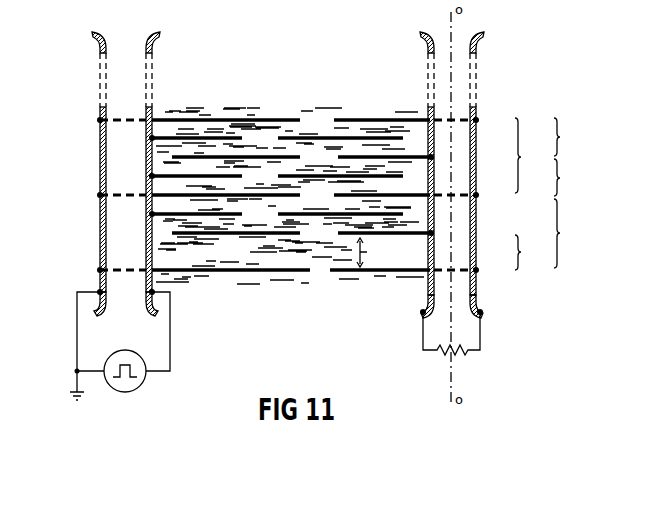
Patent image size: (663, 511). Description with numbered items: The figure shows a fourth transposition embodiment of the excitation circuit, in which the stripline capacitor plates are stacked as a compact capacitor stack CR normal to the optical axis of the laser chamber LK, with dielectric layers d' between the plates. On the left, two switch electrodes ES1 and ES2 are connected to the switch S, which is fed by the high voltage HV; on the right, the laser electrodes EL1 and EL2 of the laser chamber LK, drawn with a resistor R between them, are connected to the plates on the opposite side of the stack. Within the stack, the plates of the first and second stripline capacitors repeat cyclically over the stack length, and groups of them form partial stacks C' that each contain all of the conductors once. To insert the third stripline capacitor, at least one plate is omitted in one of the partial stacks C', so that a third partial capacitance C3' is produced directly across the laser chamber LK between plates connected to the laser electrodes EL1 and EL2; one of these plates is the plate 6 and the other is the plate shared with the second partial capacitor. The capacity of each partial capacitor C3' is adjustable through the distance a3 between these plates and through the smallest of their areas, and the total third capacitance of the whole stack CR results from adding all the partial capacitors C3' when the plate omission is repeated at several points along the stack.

The switch electrode ES1 is at (102, 48).
The switch electrode ES2 is at (148, 48).
The laser electrode EL1 is at (430, 48).
The laser electrode EL2 is at (474, 48).
The capacitor plate 6 is at (288, 270).
The distance a3 is at (373, 252).
The dielectric layer d' is at (453, 159).
The partial stack C' is at (549, 193).
The third partial capacitance C3' is at (532, 252).
The switch S is at (120, 346).
The high voltage HV is at (143, 385).
The laser chamber LK is at (451, 334).
The resistor R is at (440, 353).
The capacitor stack CR is at (558, 347).